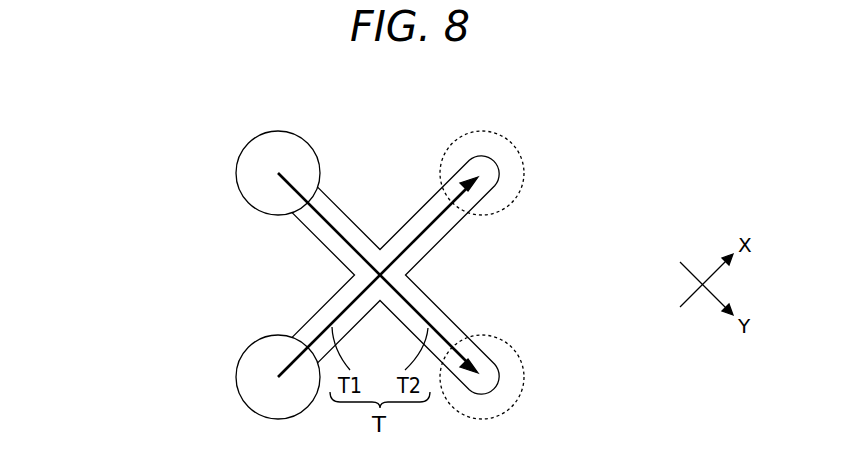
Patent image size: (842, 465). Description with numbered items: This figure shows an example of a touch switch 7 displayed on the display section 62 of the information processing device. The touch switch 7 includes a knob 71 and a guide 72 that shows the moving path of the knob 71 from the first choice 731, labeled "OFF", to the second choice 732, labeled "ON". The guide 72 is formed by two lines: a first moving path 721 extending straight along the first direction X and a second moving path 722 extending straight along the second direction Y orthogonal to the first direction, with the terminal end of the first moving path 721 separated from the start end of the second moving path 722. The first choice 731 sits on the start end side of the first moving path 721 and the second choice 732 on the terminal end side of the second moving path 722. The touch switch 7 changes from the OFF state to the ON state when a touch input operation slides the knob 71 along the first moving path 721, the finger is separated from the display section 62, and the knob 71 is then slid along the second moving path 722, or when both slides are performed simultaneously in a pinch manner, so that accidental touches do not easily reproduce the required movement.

The display section 62 is at (74, 92).
The touch switch 7 is at (351, 136).
The knob 71 is at (276, 131).
The guide 72 is at (409, 216).
The first moving path 721 is at (427, 245).
The second moving path 722 is at (333, 252).
The first choice 731 is at (159, 172).
The second choice 732 is at (584, 172).